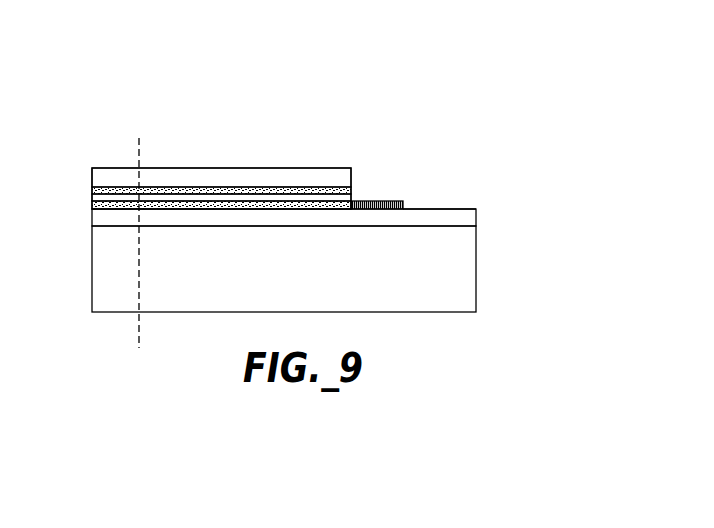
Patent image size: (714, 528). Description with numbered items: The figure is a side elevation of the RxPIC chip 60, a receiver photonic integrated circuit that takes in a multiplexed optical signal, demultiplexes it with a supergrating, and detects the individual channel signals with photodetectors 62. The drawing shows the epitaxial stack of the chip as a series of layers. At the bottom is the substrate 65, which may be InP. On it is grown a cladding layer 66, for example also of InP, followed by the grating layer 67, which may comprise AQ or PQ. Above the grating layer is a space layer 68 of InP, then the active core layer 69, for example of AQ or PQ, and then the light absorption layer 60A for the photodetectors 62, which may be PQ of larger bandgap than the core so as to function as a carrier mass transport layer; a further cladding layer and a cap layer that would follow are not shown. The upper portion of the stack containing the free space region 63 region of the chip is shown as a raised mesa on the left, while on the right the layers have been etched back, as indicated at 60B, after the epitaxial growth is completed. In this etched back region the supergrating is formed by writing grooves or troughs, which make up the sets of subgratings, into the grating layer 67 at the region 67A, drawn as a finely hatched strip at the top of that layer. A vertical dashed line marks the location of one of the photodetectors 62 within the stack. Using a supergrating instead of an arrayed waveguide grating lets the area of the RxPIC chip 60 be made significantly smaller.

The RxPIC chip 60 is at (307, 188).
The light absorption layer 60A is at (80, 168).
The etched back region 60B is at (426, 190).
The photodetectors 62 is at (136, 206).
The free space region 63 is at (215, 145).
The substrate 65 is at (100, 280).
The cladding layer 66 is at (90, 218).
The grating layer 67 is at (237, 169).
The supergrating region 67A is at (360, 151).
The space layer 68 is at (92, 205).
The active core layer 69 is at (92, 190).